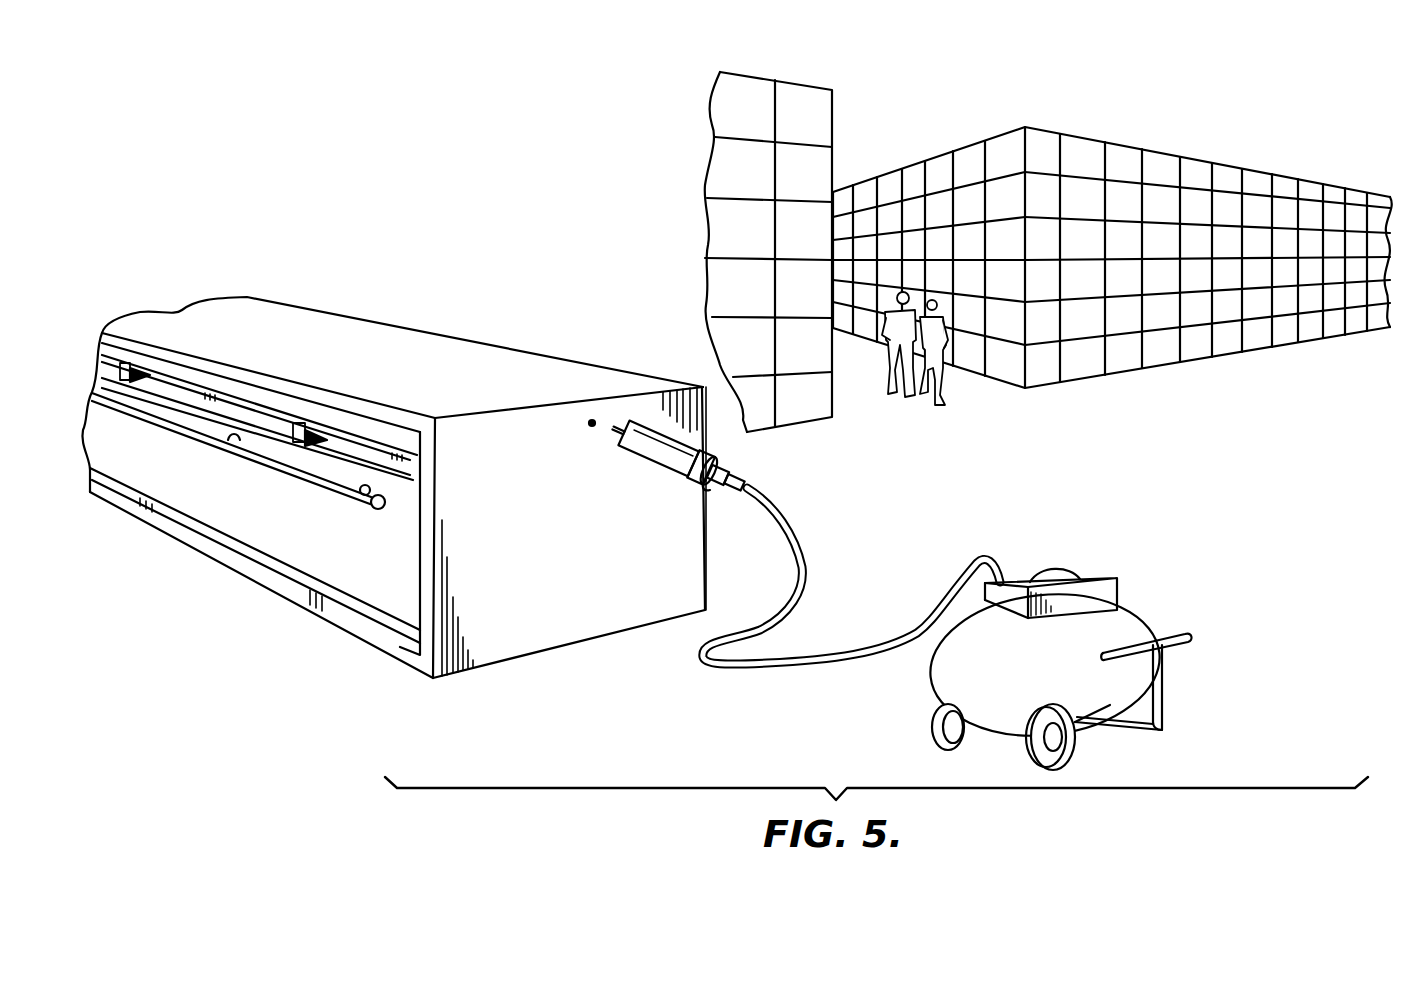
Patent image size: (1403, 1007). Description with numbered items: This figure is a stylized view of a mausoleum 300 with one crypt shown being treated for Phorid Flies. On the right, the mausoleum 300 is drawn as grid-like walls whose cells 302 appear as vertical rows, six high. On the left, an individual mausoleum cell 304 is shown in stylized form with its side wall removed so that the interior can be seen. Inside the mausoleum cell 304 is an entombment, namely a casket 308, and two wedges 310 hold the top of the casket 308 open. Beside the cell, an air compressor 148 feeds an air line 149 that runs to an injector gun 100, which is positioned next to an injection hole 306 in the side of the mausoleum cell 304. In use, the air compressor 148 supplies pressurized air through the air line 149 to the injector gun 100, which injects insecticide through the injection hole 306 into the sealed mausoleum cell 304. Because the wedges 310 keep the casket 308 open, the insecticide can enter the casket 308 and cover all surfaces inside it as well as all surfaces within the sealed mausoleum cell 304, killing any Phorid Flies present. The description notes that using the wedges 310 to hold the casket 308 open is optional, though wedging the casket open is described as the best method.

The injector gun 100 is at (752, 490).
The air compressor 148 is at (1112, 577).
The air line 149 is at (800, 535).
The mausoleum 300 is at (1048, 252).
The cells 302 is at (812, 162).
The mausoleum cell 304 is at (394, 486).
The injection hole 306 is at (593, 420).
The casket 308 is at (400, 555).
The wedges 310 is at (305, 422).